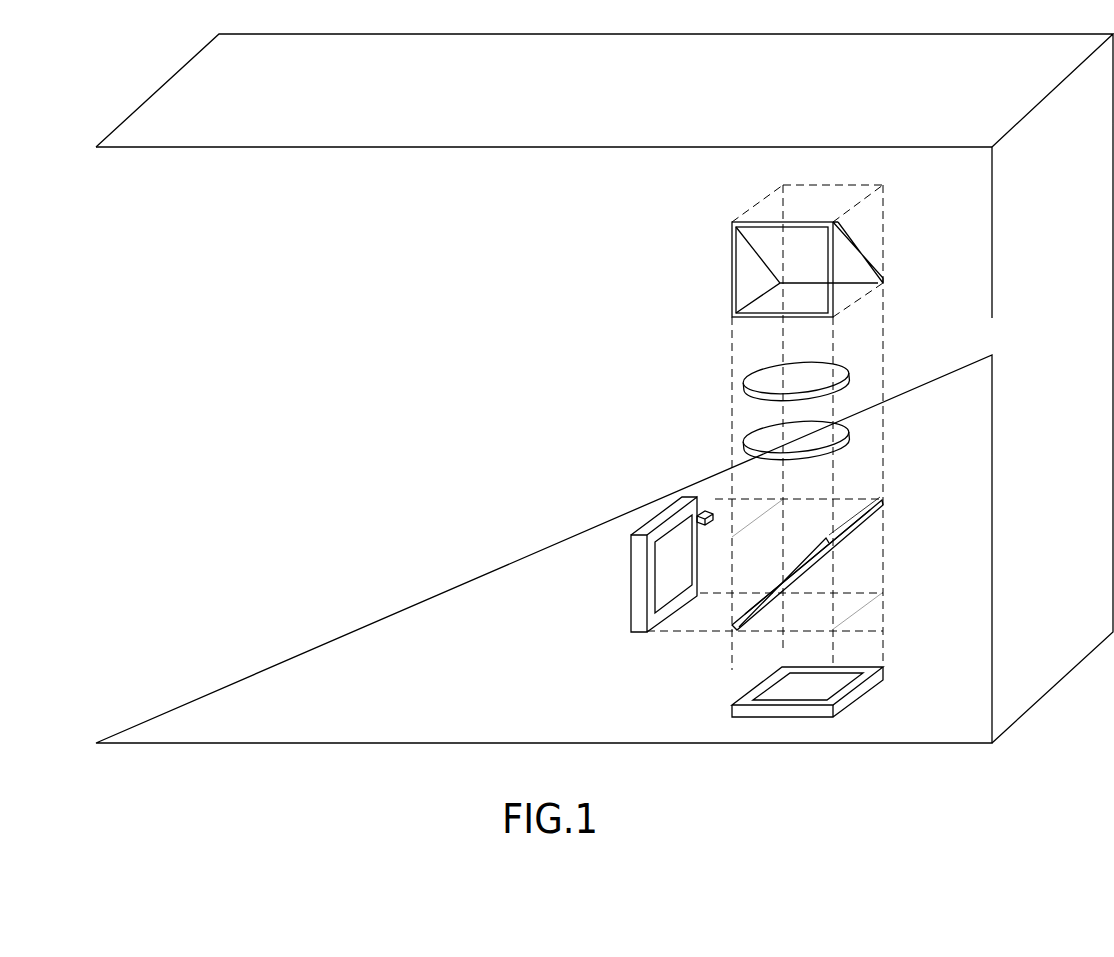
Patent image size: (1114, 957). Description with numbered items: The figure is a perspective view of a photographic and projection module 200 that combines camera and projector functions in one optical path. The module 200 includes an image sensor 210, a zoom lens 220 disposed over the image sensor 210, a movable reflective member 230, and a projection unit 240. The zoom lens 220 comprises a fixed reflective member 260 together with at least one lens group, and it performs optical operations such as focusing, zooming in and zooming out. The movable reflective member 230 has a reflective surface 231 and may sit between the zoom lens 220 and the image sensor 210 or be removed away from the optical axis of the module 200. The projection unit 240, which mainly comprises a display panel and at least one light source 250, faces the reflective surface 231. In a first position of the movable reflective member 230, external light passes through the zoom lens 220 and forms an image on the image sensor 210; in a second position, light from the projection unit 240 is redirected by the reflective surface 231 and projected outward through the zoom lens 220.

The photographic and projection module 200 is at (503, 221).
The image sensor 210 is at (882, 672).
The zoom lens 220 is at (958, 218).
The movable reflective member 230 is at (810, 556).
The reflective surface 231 is at (758, 581).
The projection unit 240 is at (607, 510).
The light source 250 is at (706, 511).
The fixed reflective member 260 is at (855, 243).